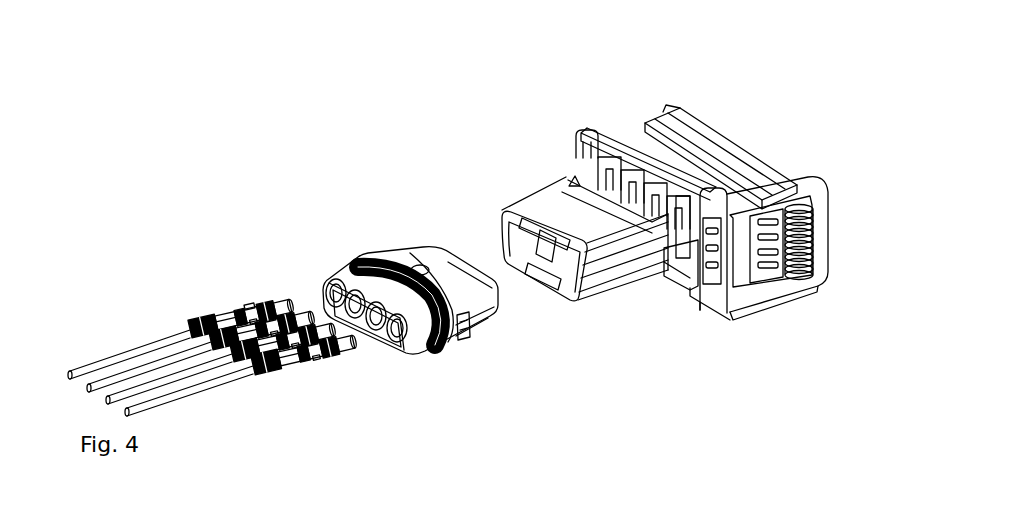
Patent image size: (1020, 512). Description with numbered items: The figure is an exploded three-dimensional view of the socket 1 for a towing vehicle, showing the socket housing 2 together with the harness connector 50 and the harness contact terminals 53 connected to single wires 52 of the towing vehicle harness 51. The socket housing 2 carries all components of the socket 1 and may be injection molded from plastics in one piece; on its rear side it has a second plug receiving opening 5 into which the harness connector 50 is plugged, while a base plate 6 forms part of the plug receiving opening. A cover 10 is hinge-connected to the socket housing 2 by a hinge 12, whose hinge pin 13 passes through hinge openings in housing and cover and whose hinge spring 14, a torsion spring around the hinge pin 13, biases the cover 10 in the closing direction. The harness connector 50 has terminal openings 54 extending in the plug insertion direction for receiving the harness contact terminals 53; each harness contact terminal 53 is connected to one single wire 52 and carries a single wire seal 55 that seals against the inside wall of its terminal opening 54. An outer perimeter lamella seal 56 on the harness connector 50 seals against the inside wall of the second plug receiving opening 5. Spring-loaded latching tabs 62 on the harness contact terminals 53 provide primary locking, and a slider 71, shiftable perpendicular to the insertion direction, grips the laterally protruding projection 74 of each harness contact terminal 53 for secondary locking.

The socket 1 is at (446, 142).
The socket housing 2 is at (576, 149).
The second plug receiving opening 5 is at (565, 262).
The base plate 6 is at (612, 140).
The cover 10 is at (712, 140).
The hinge 12 is at (811, 310).
The hinge pin 13 is at (795, 192).
The hinge spring 14 is at (808, 236).
The harness connector 50 is at (384, 242).
The towing vehicle harness 51 is at (168, 268).
The single wire 52 is at (127, 358).
The harness contact terminal 53 is at (226, 300).
The terminal opening 54 is at (368, 346).
The single wire seal 55 is at (258, 384).
The outer perimeter lamella seal 56 is at (440, 343).
The spring-loaded latching tabs 62 is at (272, 303).
The slider 71 is at (462, 333).
The projection 74 is at (252, 307).